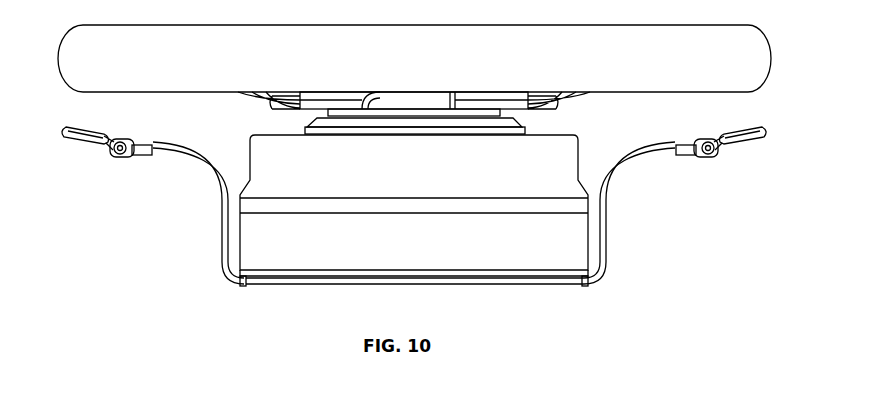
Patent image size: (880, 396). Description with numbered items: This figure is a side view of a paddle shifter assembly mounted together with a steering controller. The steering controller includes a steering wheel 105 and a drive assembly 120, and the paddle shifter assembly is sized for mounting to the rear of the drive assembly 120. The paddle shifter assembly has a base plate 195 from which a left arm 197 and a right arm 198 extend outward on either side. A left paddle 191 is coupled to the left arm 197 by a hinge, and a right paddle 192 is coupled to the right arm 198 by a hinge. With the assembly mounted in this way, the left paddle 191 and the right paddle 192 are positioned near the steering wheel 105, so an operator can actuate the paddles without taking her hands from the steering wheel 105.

The steering wheel 105 is at (630, 78).
The drive assembly 120 is at (262, 161).
The left paddle 191 is at (87, 141).
The right paddle 192 is at (740, 145).
The base plate 195 is at (520, 280).
The left arm 197 is at (222, 223).
The right arm 198 is at (607, 238).